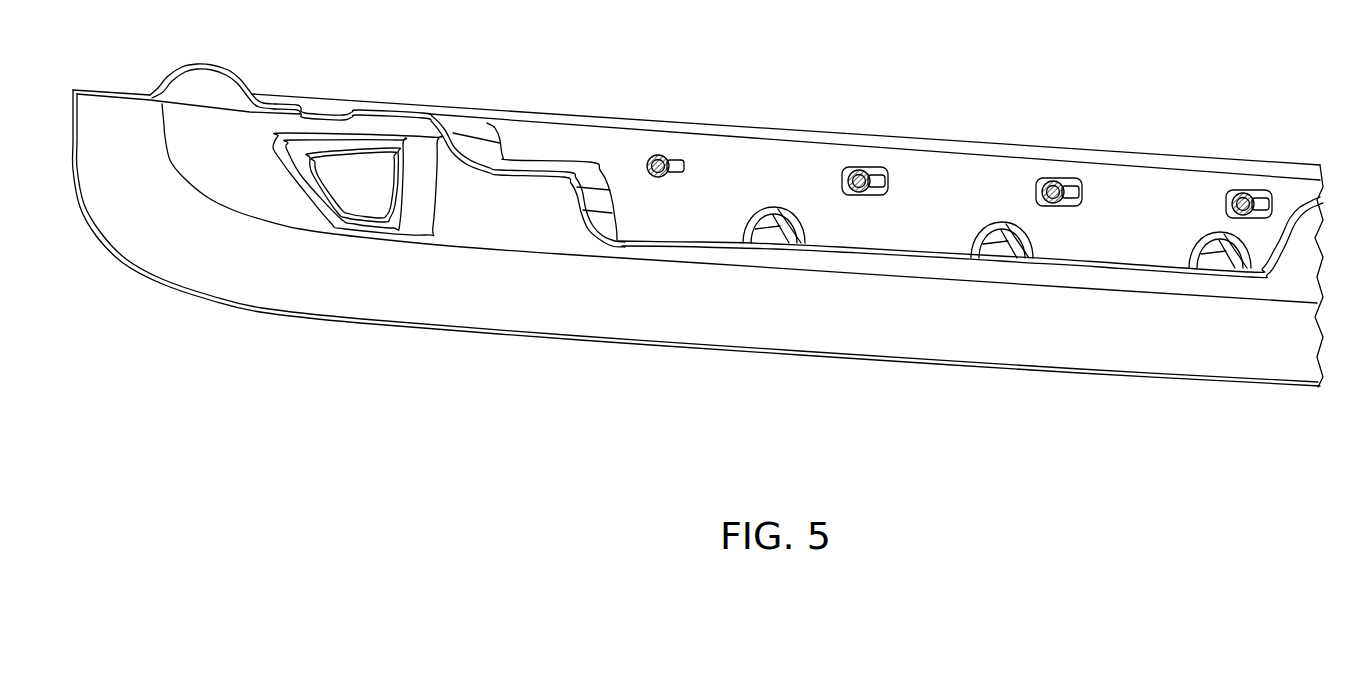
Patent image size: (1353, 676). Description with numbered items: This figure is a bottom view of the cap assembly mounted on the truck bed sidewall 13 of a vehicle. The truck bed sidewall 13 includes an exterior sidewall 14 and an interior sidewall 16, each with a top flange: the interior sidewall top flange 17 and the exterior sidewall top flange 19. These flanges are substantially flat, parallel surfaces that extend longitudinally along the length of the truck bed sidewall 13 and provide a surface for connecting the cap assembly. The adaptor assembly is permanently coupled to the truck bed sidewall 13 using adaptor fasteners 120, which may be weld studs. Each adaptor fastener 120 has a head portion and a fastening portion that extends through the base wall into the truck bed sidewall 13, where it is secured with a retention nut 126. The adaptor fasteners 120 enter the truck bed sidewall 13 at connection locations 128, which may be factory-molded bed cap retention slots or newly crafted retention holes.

The truck bed sidewall 13 is at (870, 383).
The exterior sidewall 14 is at (530, 343).
The interior sidewall 16 is at (603, 200).
The interior sidewall top flange 17 is at (1170, 197).
The exterior sidewall top flange 19 is at (483, 207).
The adaptor fastener 120 is at (653, 178).
The retention nut 126 is at (857, 192).
The connection location 128 is at (892, 158).